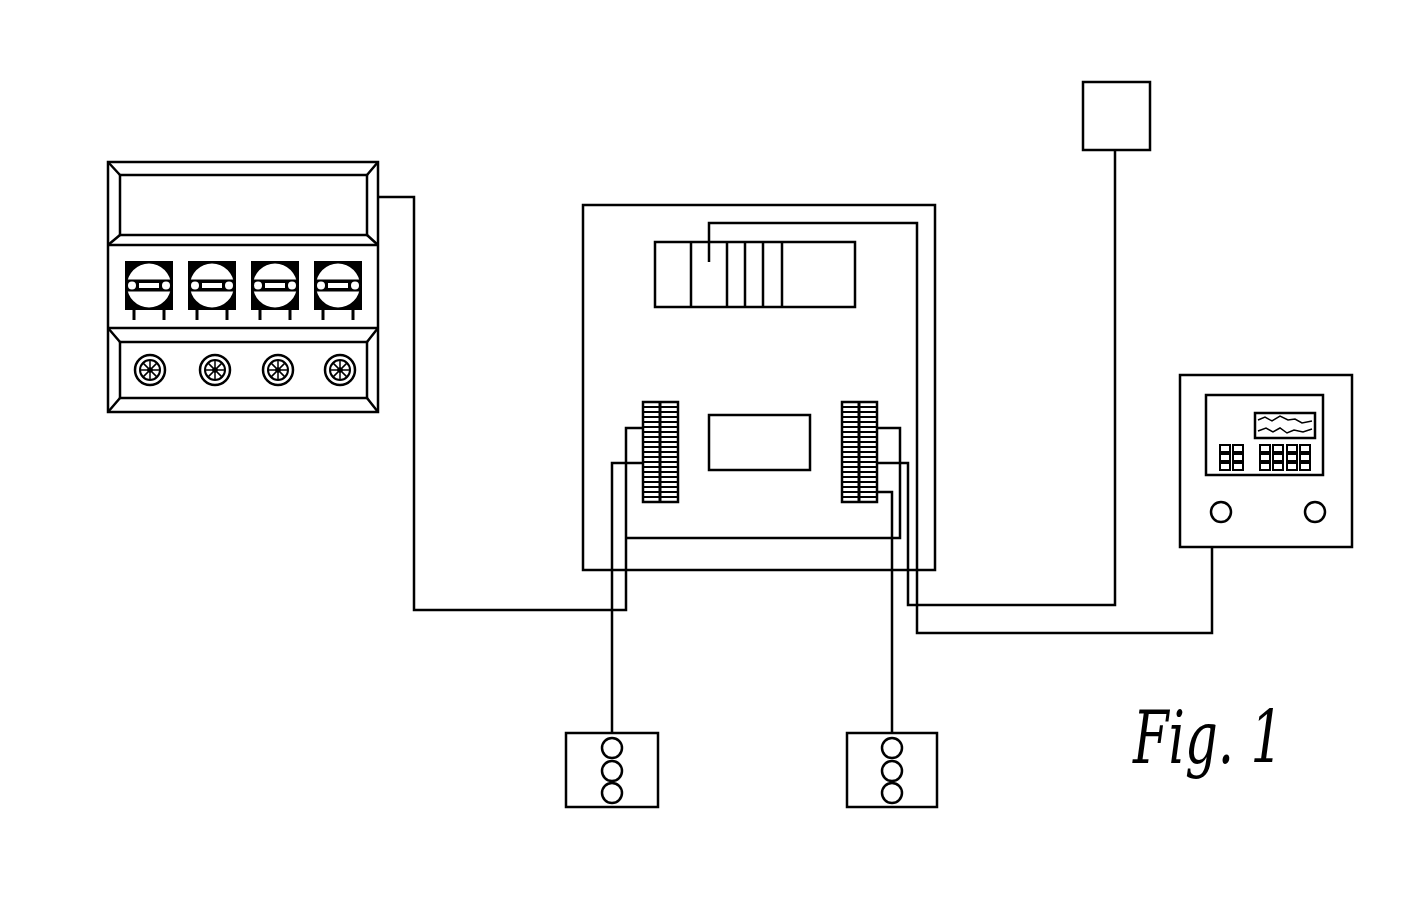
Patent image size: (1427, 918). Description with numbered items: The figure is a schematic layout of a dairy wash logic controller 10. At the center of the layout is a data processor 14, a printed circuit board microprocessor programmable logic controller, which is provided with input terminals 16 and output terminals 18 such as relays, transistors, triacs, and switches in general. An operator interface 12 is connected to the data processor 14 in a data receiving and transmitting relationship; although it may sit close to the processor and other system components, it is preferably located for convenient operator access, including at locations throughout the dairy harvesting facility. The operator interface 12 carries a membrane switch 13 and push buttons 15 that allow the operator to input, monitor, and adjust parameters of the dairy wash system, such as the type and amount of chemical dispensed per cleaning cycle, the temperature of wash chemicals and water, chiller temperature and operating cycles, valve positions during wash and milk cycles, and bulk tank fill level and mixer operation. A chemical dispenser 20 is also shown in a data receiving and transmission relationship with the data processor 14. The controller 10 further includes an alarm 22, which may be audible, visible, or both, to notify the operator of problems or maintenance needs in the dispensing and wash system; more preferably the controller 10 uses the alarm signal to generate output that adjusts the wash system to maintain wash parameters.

The dairy wash logic controller 10 is at (759, 322).
The operator interface 12 is at (1303, 504).
The membrane switch 13 is at (1318, 456).
The data processor 14 is at (667, 270).
The push buttons 15 is at (1315, 522).
The input terminals 16 is at (585, 766).
The output terminals 18 is at (925, 765).
The chemical dispenser 20 is at (327, 180).
The alarm 22 is at (1140, 118).